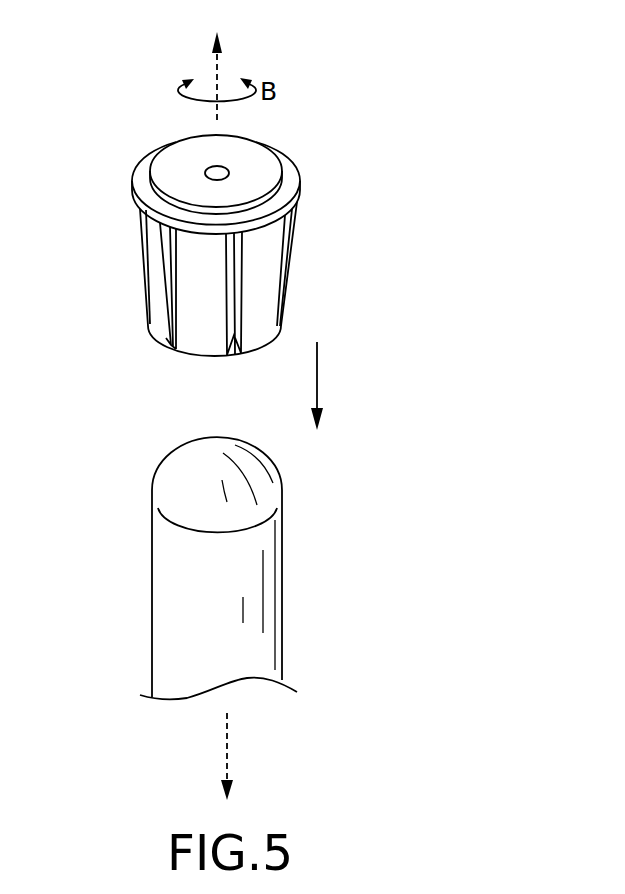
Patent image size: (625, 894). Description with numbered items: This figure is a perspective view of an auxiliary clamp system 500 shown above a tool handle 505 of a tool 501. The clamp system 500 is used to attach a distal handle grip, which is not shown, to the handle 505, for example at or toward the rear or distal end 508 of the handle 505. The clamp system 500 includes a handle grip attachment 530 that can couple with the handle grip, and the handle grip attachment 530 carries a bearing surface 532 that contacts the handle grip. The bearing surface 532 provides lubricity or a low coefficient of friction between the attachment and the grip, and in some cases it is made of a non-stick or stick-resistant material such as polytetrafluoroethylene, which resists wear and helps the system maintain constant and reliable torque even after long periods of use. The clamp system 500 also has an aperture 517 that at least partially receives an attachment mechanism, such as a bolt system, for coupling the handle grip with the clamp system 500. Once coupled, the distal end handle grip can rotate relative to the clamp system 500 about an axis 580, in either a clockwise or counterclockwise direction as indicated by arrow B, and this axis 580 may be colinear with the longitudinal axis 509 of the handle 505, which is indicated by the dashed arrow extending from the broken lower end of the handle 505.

The auxiliary clamp system 500 is at (338, 248).
The handle grip attachment 530 is at (325, 158).
The bearing surface 532 is at (167, 168).
The aperture 517 is at (215, 172).
The axis 580 is at (220, 66).
The tool 501 is at (358, 578).
The distal end 508 is at (282, 522).
The tool handle 505 is at (282, 643).
The longitudinal axis 509 is at (230, 757).